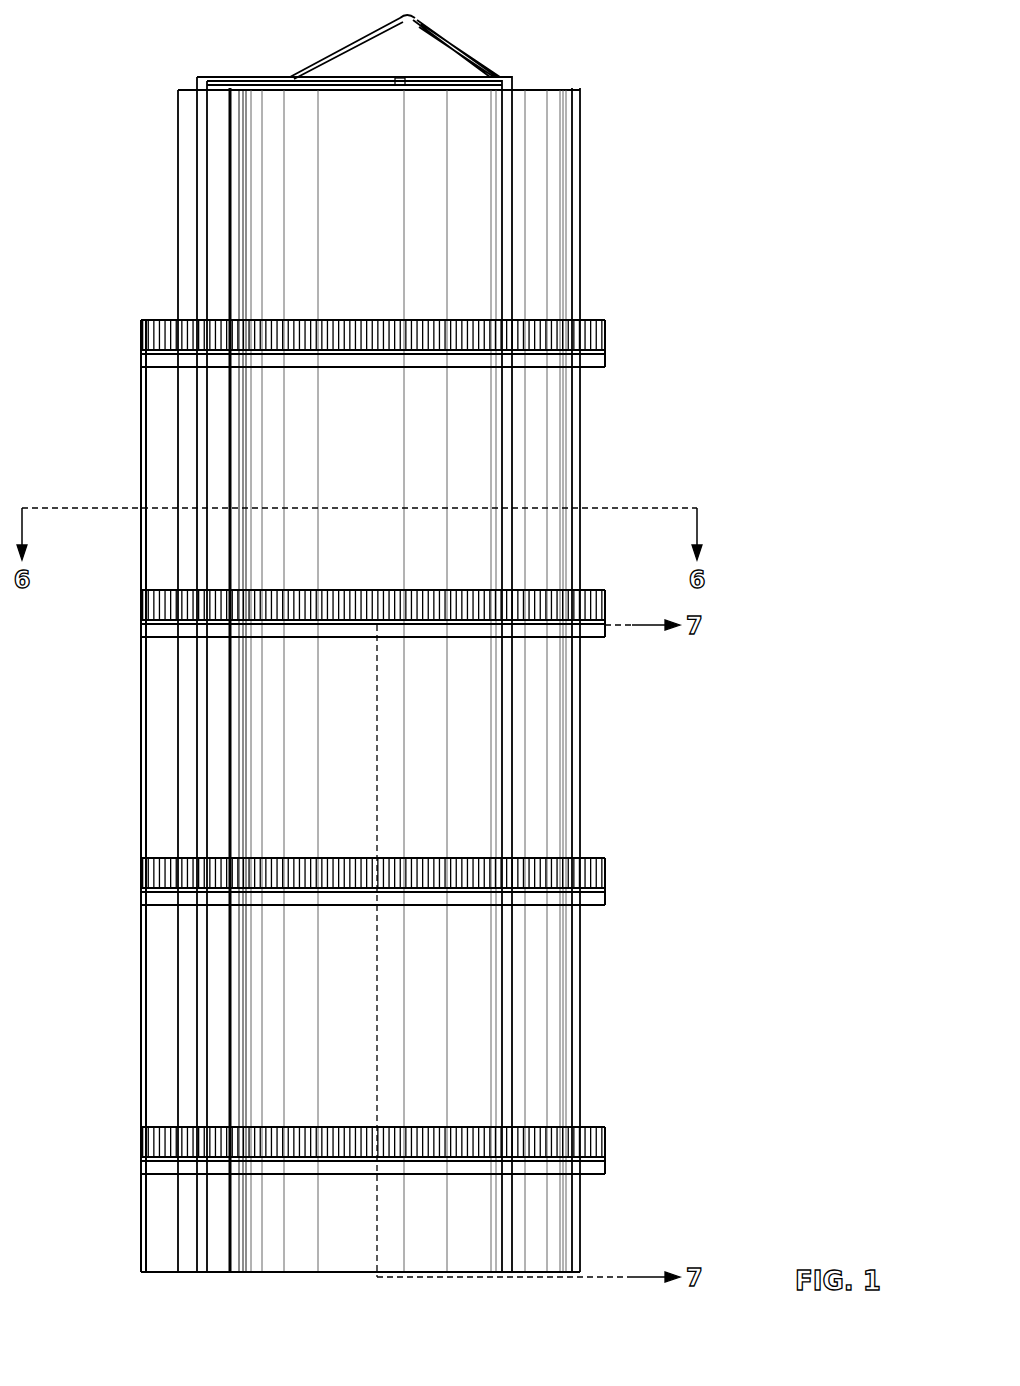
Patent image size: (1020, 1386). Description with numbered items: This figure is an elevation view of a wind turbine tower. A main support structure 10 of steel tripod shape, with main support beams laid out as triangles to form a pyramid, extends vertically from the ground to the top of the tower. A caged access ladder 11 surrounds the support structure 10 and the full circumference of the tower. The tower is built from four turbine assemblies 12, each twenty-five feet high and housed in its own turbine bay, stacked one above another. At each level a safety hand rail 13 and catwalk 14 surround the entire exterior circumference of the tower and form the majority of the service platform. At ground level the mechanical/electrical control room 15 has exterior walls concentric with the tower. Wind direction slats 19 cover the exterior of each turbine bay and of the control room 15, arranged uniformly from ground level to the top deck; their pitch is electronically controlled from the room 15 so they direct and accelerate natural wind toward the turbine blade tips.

The main support structure 10 is at (219, 78).
The caged access ladder 11 is at (178, 135).
The turbine assembly 12 is at (335, 118).
The safety hand rail 13 is at (152, 320).
The catwalk 14 is at (143, 362).
The mechanical/electrical control room 15 is at (335, 1198).
The wind direction slats 19 is at (232, 190).